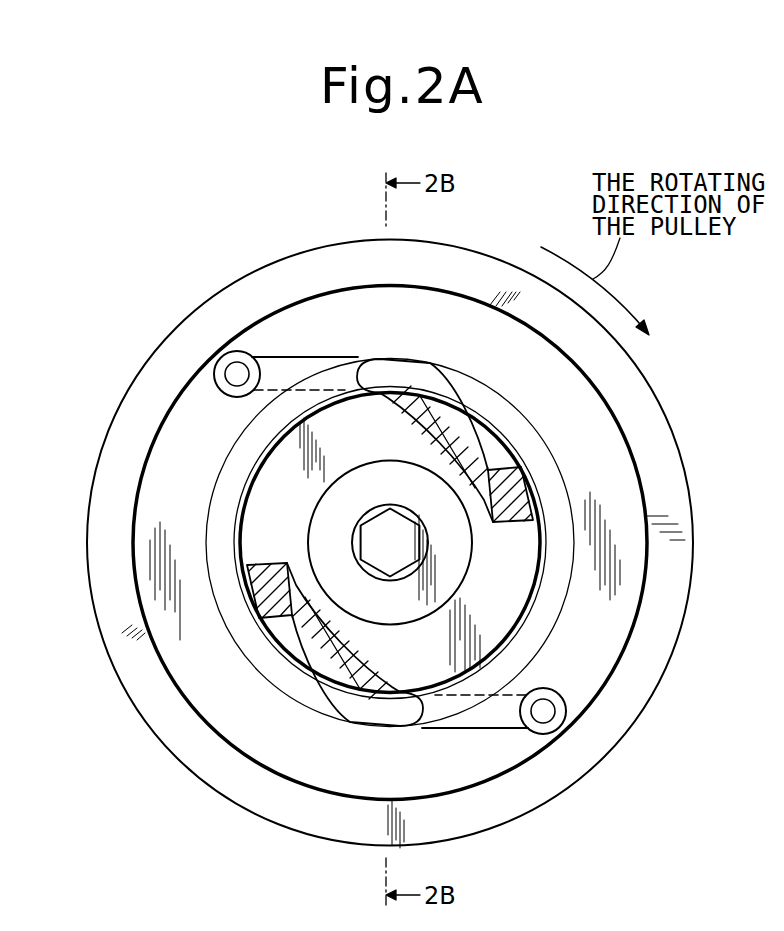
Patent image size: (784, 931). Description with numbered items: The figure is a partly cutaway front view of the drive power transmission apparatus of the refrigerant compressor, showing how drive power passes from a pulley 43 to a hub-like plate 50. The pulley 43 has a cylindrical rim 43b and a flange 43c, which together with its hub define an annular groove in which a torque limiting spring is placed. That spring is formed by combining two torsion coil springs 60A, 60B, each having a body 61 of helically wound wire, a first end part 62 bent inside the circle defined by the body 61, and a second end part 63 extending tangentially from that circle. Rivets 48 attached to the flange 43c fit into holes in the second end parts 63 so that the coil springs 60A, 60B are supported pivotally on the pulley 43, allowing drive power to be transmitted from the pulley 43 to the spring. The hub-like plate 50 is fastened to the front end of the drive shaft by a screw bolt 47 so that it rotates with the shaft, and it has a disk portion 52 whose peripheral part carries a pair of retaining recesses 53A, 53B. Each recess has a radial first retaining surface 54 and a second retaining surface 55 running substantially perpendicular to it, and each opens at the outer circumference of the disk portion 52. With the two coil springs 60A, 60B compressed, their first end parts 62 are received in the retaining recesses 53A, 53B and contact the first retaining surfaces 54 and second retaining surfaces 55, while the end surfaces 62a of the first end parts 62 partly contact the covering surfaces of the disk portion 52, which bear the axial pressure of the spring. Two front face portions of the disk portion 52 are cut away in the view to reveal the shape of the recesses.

The pulley 43 is at (229, 279).
The cylindrical rim 43b is at (283, 270).
The flange 43c is at (189, 384).
The screw bolt 47 is at (394, 531).
The rivet 48 is at (232, 368).
The hub-like plate 50 is at (283, 474).
The disk portion 52 is at (262, 497).
The retaining recess 53A is at (286, 588).
The retaining recess 53B is at (489, 523).
The first retaining surface 54 is at (515, 458).
The second retaining surface 55 is at (418, 440).
The torsion coil spring 60A is at (368, 716).
The torsion coil spring 60B is at (318, 360).
The body 61 is at (207, 528).
The first end part 62 is at (470, 418).
The end surface 62a is at (470, 437).
The second end part 63 is at (292, 358).